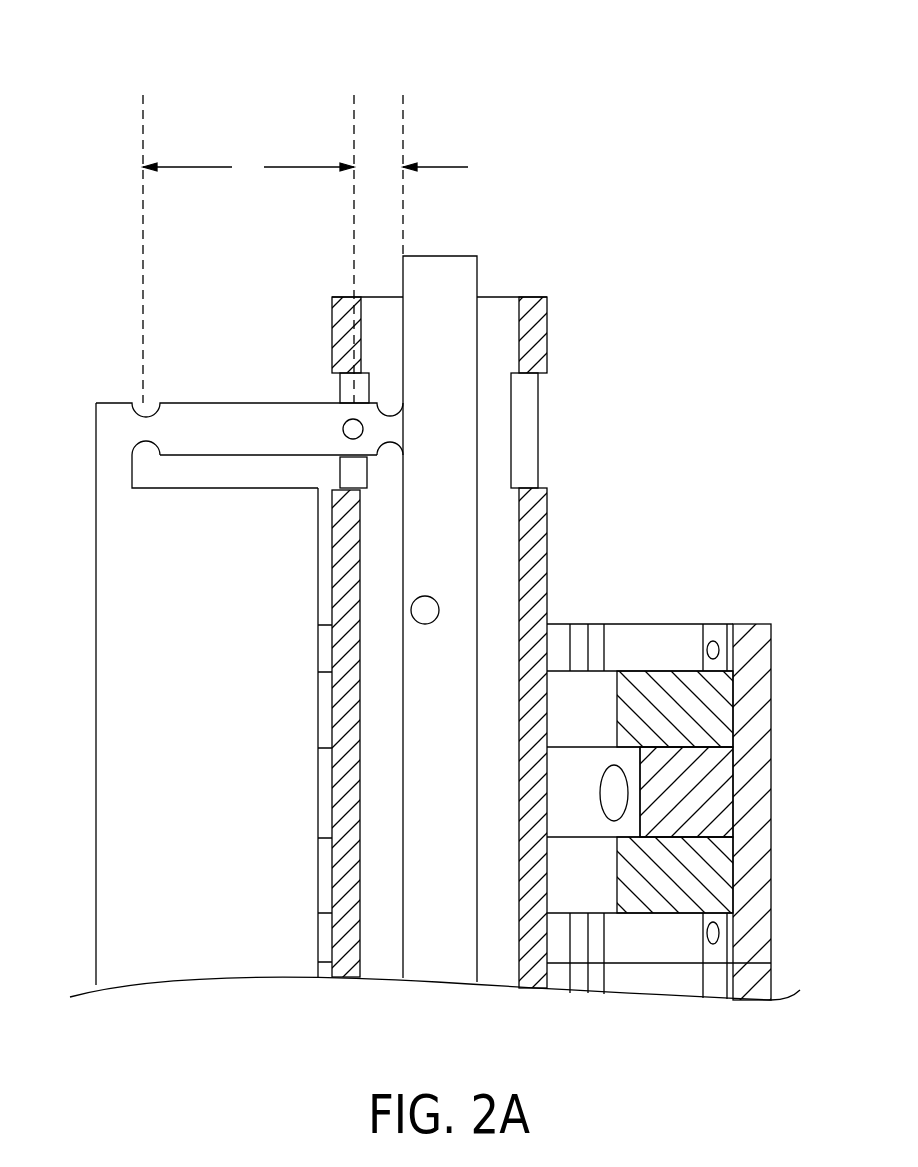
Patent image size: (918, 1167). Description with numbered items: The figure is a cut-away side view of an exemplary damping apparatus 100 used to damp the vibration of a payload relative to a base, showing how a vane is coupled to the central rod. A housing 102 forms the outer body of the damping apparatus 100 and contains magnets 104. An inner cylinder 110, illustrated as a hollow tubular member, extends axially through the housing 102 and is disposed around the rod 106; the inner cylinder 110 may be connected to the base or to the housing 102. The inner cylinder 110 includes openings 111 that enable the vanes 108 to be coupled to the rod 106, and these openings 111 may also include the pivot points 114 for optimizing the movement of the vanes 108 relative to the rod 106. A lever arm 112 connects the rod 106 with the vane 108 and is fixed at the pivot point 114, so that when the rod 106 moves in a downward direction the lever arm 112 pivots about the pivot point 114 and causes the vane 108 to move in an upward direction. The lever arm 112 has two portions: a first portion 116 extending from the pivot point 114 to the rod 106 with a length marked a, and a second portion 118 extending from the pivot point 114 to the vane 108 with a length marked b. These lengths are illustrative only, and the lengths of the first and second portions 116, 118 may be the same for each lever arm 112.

The damping apparatus 100 is at (70, 82).
The housing 102 is at (755, 800).
The magnets 104 is at (666, 702).
The rod 106 is at (458, 657).
The vanes 108 is at (125, 752).
The inner cylinder 110 is at (350, 592).
The openings 111 is at (365, 390).
The lever arm 112 is at (218, 456).
The pivot point 114 is at (348, 439).
The first portion 116 is at (390, 436).
The second portion 118 is at (231, 412).